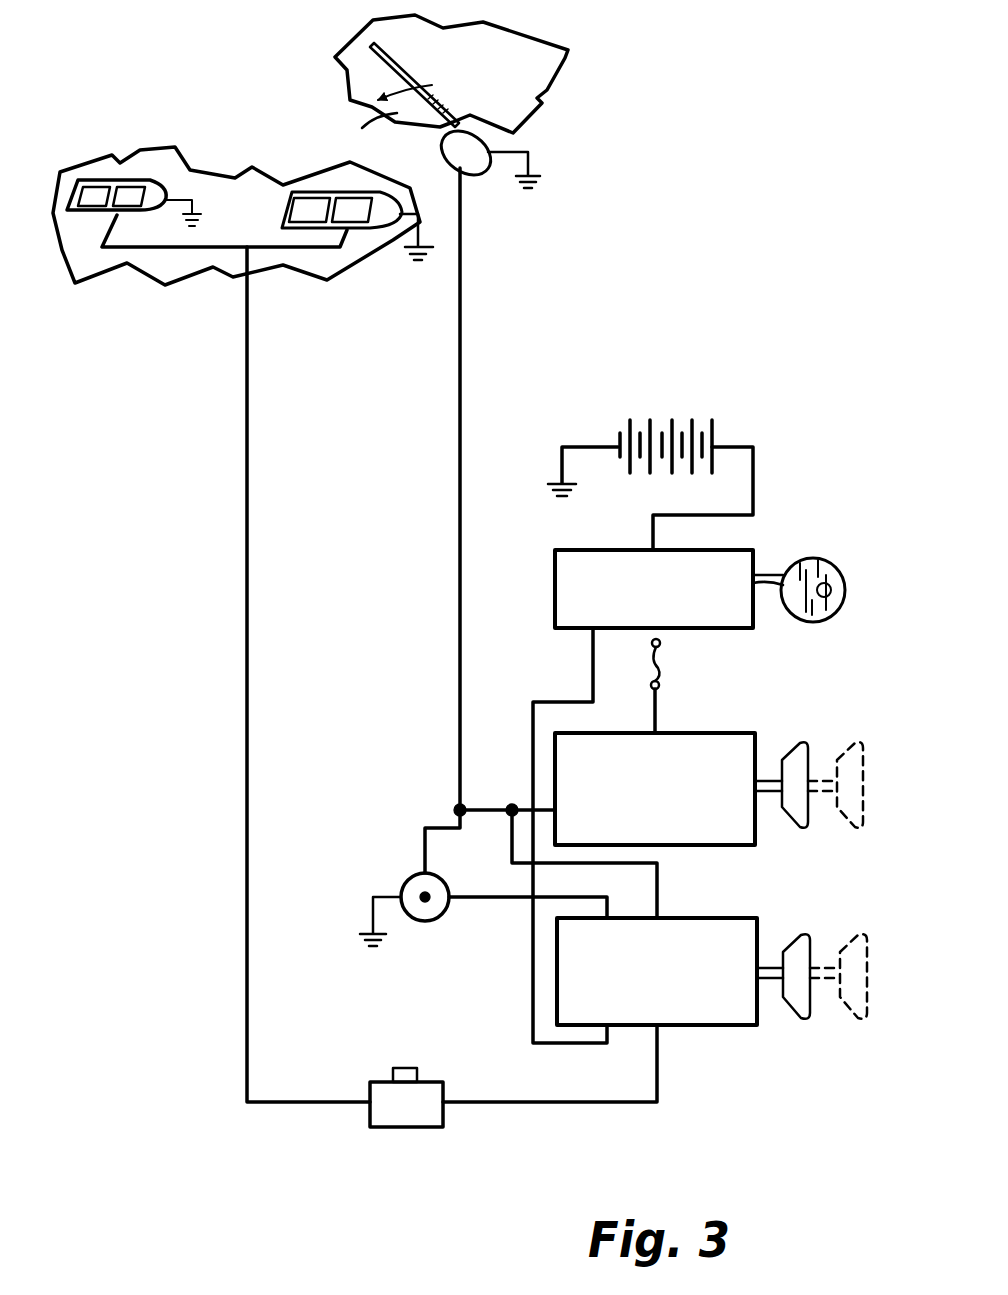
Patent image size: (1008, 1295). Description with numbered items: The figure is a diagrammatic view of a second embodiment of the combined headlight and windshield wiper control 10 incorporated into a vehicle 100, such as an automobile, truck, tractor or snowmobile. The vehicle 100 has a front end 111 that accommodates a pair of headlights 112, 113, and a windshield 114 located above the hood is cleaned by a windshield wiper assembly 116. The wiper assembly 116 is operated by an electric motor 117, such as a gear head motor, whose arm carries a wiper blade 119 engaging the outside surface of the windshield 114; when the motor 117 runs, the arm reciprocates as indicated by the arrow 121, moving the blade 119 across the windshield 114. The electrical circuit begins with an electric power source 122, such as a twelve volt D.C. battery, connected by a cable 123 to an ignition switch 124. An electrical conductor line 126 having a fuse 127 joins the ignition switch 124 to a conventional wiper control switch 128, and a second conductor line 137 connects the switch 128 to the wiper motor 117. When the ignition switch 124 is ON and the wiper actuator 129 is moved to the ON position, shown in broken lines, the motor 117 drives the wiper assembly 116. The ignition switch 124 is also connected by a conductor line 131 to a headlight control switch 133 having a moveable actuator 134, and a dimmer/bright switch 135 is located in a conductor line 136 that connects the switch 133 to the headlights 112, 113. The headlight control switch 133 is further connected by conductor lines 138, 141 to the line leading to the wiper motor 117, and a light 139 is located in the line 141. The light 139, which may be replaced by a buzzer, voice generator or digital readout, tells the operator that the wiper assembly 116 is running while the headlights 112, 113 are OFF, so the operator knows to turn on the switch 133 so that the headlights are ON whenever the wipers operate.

The wiper-headlight control system 10 is at (614, 209).
The vehicle 100 is at (304, 302).
The front end 111 is at (201, 168).
The headlight 112 is at (92, 193).
The headlight 113 is at (313, 197).
The windshield 114 is at (413, 112).
The windshield wiper assembly 116 is at (508, 119).
The electric motor 117 is at (470, 168).
The wiper blade 119 is at (494, 64).
The arrow 121 is at (353, 92).
The electric power source 122 is at (672, 418).
The cable 123 is at (753, 473).
The ignition switch 124 is at (553, 560).
The electrical conductor line 126 is at (658, 712).
The fuse 127 is at (662, 665).
The wiper control switch 128 is at (738, 828).
The wiper actuator 129 is at (797, 762).
The conductor line 131 is at (532, 783).
The headlight control switch 133 is at (692, 1007).
The moveable actuator 134 is at (797, 1000).
The dimmer/bright switch 135 is at (400, 1113).
The conductor line 136 is at (281, 1103).
The second conductor line 137 is at (462, 318).
The conductor line 138 is at (653, 893).
The light 139 is at (410, 873).
The conductor line 141 is at (473, 902).